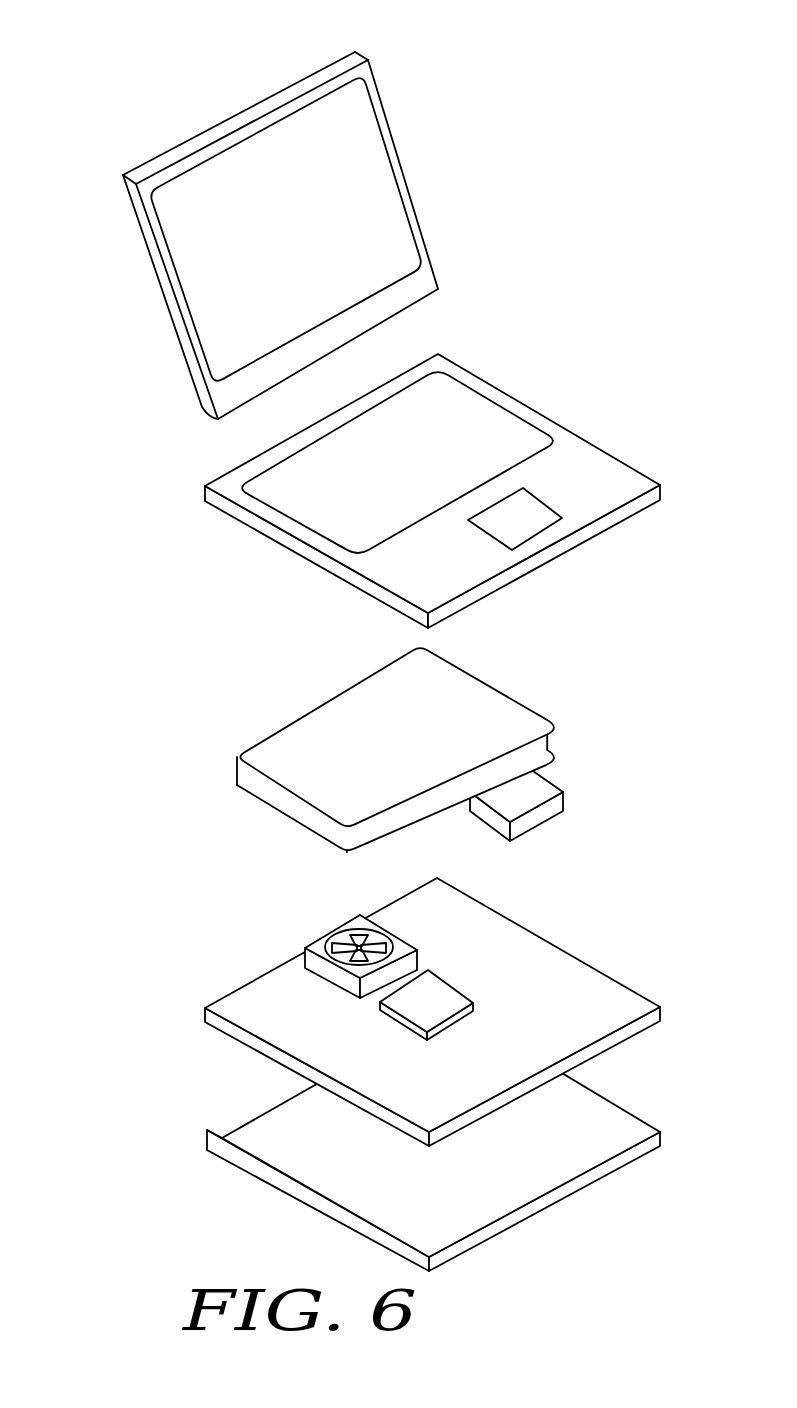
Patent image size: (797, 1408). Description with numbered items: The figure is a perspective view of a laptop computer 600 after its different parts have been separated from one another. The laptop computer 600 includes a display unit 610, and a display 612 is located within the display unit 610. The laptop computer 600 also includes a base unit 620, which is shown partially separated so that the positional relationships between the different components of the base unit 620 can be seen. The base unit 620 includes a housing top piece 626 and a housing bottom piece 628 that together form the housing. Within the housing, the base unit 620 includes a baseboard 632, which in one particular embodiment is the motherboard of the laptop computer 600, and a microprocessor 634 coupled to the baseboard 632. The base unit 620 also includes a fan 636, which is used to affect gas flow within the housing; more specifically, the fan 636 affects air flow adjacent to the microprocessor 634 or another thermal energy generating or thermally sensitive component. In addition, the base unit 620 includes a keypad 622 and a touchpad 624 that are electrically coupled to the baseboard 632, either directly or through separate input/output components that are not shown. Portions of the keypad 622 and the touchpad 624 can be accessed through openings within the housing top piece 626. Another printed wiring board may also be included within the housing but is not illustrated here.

The laptop computer 600 is at (134, 52).
The display unit 610 is at (368, 60).
The display 612 is at (306, 242).
The base unit 620 is at (162, 440).
The keypad 622 is at (510, 690).
The touchpad 624 is at (555, 783).
The housing top piece 626 is at (638, 465).
The housing bottom piece 628 is at (640, 1117).
The baseboard 632 is at (613, 947).
The microprocessor 634 is at (443, 978).
The fan 636 is at (395, 932).